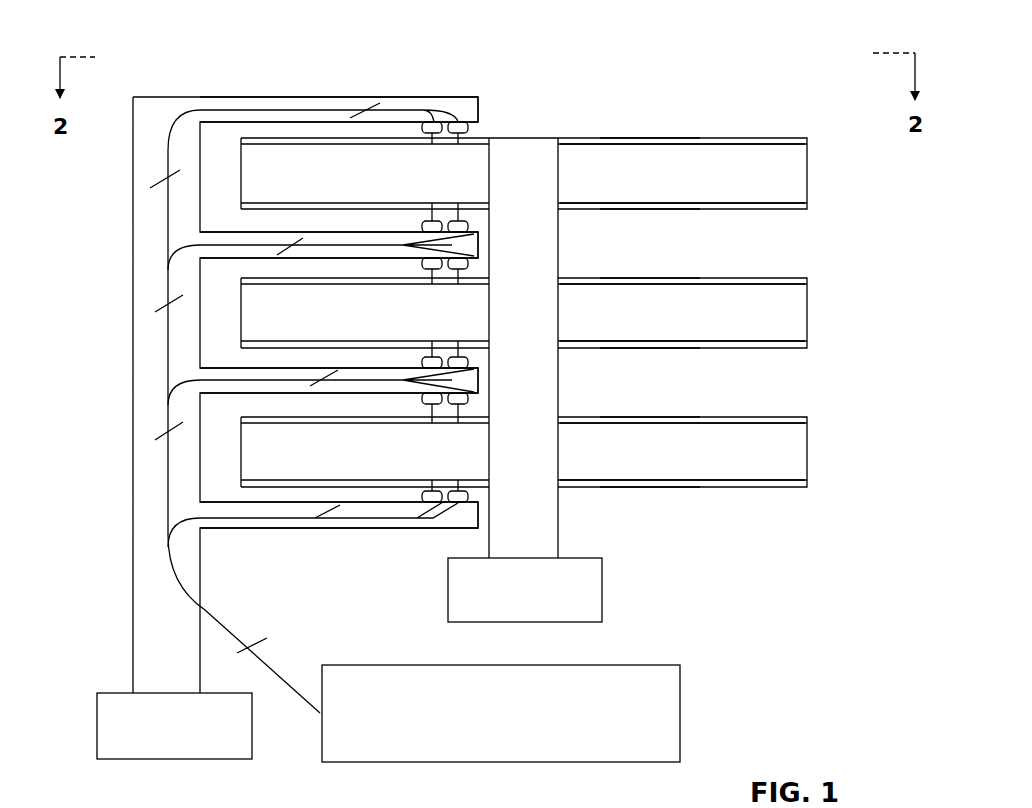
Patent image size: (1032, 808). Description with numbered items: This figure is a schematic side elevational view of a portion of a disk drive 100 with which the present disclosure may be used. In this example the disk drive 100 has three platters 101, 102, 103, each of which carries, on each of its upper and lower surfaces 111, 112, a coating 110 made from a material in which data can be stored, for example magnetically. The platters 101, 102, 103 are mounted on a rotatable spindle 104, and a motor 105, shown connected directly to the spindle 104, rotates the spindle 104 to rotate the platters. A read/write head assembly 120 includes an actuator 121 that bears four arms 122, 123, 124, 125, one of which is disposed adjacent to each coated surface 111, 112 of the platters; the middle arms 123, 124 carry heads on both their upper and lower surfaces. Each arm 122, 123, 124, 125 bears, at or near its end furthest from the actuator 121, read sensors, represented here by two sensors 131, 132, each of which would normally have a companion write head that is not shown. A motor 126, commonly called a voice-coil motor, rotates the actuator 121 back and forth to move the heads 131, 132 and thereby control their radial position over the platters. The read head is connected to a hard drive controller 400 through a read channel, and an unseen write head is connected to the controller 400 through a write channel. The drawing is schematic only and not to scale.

The disk drive 100 is at (178, 58).
The platter 101 is at (807, 173).
The platter 102 is at (807, 312).
The platter 103 is at (807, 450).
The spindle 104 is at (530, 138).
The motor 105 is at (603, 591).
The coating 110 is at (806, 140).
The upper surface 111 is at (636, 138).
The lower surface 112 is at (635, 211).
The read/write head assembly 120 is at (120, 246).
The actuator 121 is at (133, 325).
The arm 122 is at (305, 97).
The arm 123 is at (322, 232).
The arm 124 is at (322, 368).
The arm 125 is at (322, 502).
The voice-coil motor 126 is at (125, 693).
The sensor 131 is at (460, 142).
The sensor 132 is at (432, 142).
The hard drive controller 400 is at (388, 665).